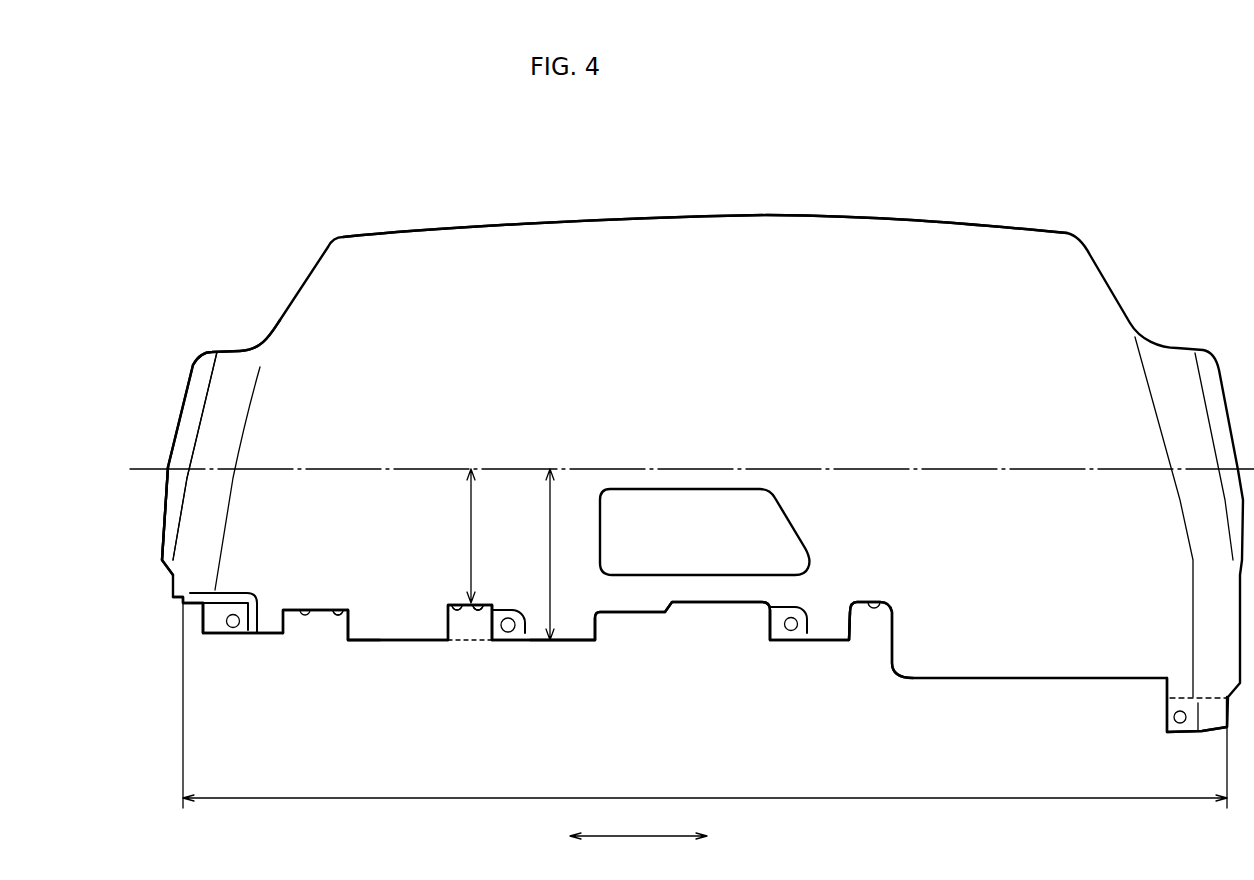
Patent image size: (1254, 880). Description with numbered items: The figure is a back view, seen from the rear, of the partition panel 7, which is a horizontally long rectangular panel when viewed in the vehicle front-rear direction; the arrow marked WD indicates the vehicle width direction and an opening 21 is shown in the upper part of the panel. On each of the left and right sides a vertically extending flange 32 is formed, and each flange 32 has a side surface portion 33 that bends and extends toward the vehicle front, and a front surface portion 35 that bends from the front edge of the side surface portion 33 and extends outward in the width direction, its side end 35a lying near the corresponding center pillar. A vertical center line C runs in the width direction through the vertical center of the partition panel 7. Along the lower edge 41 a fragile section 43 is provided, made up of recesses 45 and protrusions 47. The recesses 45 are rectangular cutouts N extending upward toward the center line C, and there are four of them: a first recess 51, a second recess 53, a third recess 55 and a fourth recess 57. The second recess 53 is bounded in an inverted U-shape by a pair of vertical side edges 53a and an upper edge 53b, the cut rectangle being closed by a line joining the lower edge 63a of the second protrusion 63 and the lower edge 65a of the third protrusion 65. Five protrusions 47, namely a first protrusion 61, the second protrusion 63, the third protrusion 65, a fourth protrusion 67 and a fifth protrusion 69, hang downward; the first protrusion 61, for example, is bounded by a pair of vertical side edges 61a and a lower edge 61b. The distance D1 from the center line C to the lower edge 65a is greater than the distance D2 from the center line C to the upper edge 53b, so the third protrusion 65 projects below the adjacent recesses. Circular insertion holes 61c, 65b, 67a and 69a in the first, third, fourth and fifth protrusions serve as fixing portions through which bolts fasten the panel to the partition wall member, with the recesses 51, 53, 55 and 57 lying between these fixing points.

The partition panel 7 is at (797, 186).
The opening 21 is at (730, 490).
The flange 32 is at (231, 335).
The side surface portion 33 is at (225, 395).
The front surface portion 35 is at (188, 408).
The side end 35a is at (172, 447).
The lower edge 41 is at (705, 784).
The fragile section 43 is at (705, 784).
The recess 45 is at (648, 607).
The protrusion 47 is at (700, 629).
The first recess 51 is at (313, 605).
The second recess 53 is at (455, 603).
The vertical side edge 53a is at (478, 612).
The upper edge 53b is at (481, 605).
The third recess 55 is at (693, 604).
The fourth recess 57 is at (873, 612).
The first protrusion 61 is at (249, 618).
The vertical side edge 61a is at (202, 618).
The lower edge 61b is at (263, 626).
The insertion hole 61c is at (238, 613).
The second protrusion 63 is at (402, 676).
The lower edge 63a is at (360, 642).
The third protrusion 65 is at (572, 666).
The lower edge 65a is at (557, 642).
The insertion hole 65b is at (505, 634).
The fourth protrusion 67 is at (811, 666).
The insertion hole 67a is at (789, 633).
The fifth protrusion 69 is at (1133, 689).
The insertion hole 69a is at (1182, 708).
The vertical center line C is at (851, 466).
The rectangular cutout N is at (348, 608).
The distance D1 is at (567, 554).
The distance D2 is at (489, 536).
The vehicle width direction WD is at (638, 824).